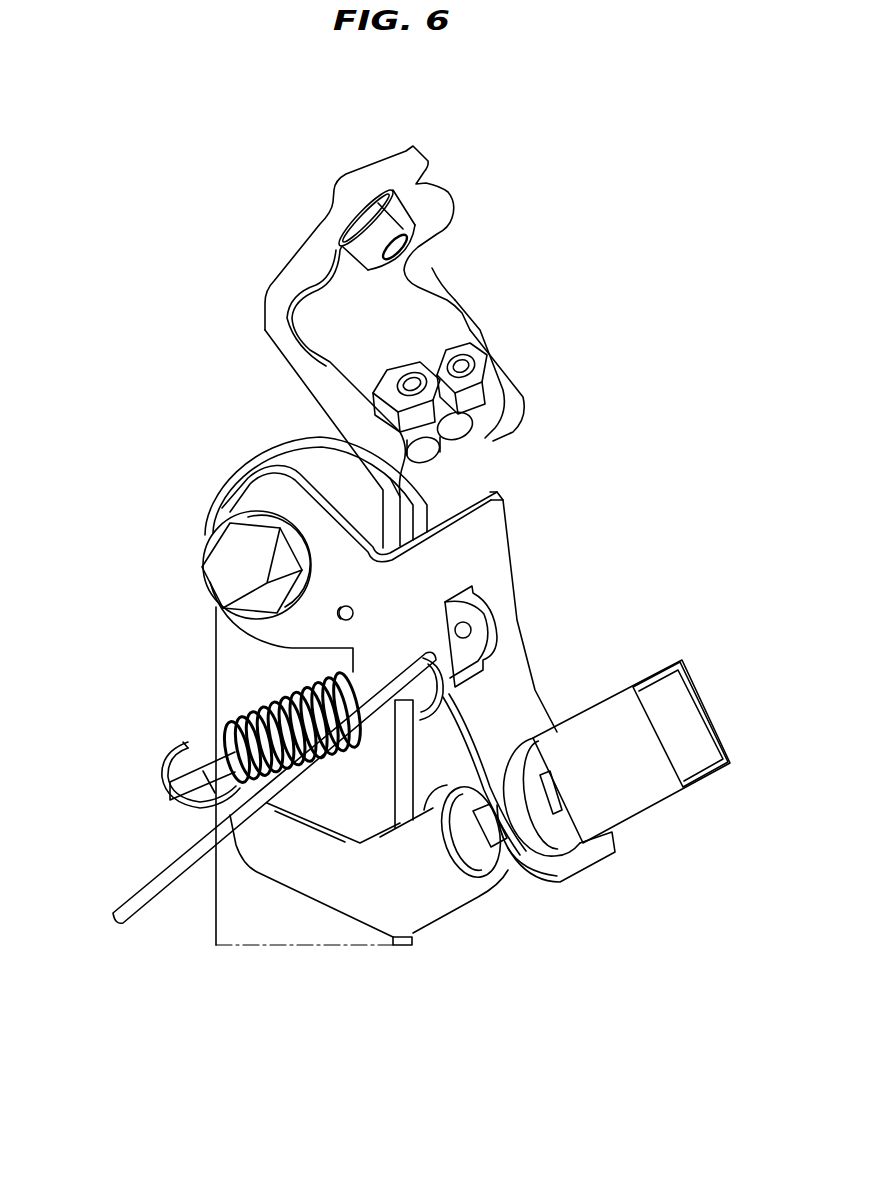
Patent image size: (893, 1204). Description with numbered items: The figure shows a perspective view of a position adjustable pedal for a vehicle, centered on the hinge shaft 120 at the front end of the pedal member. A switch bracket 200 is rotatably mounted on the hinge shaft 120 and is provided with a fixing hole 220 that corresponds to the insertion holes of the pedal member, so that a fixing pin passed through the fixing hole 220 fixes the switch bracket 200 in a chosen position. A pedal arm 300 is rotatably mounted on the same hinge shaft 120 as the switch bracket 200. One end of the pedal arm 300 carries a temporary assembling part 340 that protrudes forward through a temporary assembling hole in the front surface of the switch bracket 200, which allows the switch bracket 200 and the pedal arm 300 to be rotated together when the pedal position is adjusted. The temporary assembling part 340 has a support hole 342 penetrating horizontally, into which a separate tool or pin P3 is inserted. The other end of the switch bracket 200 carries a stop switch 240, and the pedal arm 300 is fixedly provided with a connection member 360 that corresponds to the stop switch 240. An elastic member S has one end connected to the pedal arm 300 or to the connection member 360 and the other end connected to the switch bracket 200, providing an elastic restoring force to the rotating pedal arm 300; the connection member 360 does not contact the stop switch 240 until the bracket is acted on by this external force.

The hinge shaft 120 is at (230, 568).
The switch bracket 200 is at (520, 503).
The fixing hole 220 is at (339, 617).
The stop switch 240 is at (627, 793).
The pedal arm 300 is at (287, 917).
The temporary assembling part 340 is at (490, 622).
The support hole 342 is at (470, 633).
The connection member 360 is at (430, 905).
The elastic member S is at (228, 722).
The pin P3 is at (178, 883).